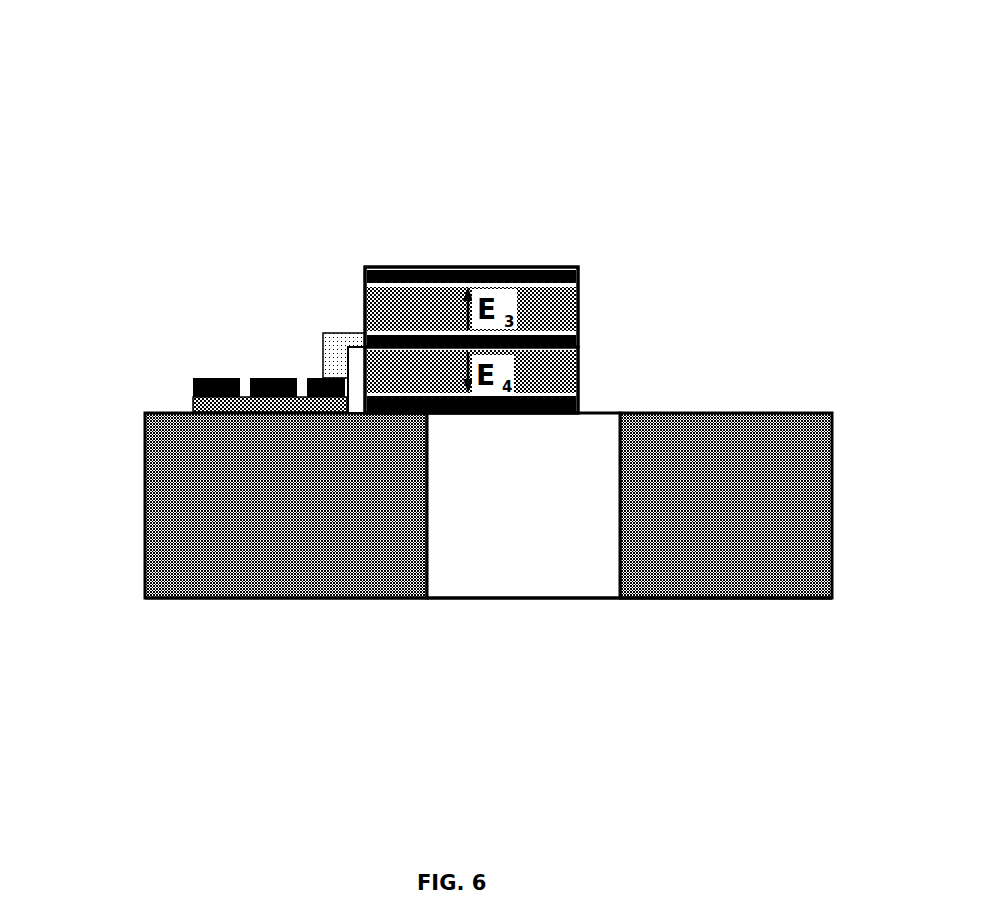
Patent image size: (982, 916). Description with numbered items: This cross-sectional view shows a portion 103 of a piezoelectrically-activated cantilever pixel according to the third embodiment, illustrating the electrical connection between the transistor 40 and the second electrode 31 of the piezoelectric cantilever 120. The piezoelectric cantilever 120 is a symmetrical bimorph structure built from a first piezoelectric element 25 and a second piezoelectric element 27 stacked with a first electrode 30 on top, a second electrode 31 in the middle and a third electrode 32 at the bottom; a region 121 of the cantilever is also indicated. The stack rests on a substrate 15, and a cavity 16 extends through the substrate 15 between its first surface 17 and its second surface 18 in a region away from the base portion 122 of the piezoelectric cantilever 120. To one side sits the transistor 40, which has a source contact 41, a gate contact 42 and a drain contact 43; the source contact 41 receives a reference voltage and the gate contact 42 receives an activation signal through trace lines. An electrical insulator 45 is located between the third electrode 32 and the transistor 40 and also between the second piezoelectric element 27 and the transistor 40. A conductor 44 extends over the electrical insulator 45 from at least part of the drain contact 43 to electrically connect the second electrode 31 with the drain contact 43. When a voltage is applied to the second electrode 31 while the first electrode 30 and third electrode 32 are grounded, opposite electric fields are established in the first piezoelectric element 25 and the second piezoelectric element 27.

The substrate 15 is at (145, 465).
The cavity 16 is at (533, 570).
The first surface 17 is at (712, 413).
The second surface 18 is at (714, 590).
The first piezoelectric element 25 is at (578, 307).
The second piezoelectric element 27 is at (578, 372).
The first electrode 30 is at (412, 270).
The second electrode 31 is at (578, 340).
The third electrode 32 is at (578, 405).
The transistor 40 is at (192, 404).
The source contact 41 is at (193, 388).
The gate contact 42 is at (258, 378).
The drain contact 43 is at (317, 378).
The conductor 44 is at (347, 333).
The electrical insulator 45 is at (357, 367).
The portion of a piezoelectrically-activated cantilever pixel 103 is at (447, 732).
The piezoelectric cantilever 120 is at (481, 93).
The upper capacitor portion 121 is at (547, 233).
The base portion 122 is at (397, 210).